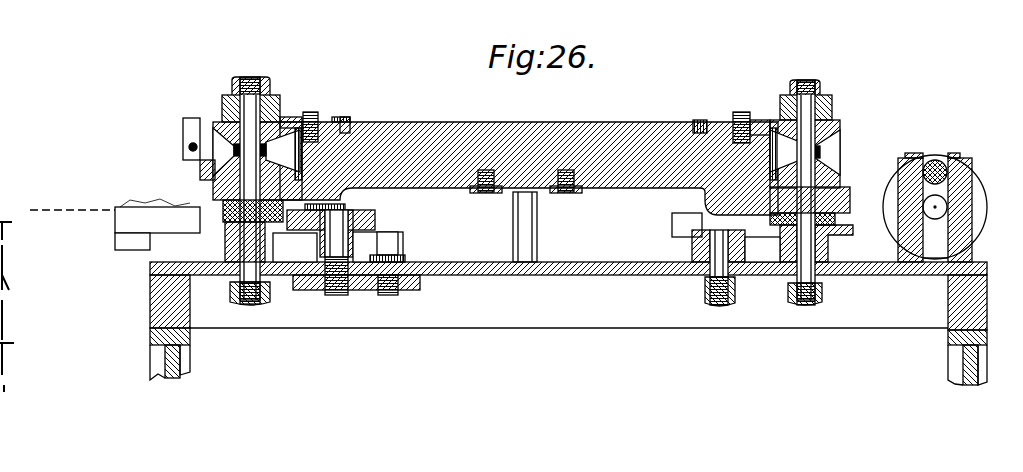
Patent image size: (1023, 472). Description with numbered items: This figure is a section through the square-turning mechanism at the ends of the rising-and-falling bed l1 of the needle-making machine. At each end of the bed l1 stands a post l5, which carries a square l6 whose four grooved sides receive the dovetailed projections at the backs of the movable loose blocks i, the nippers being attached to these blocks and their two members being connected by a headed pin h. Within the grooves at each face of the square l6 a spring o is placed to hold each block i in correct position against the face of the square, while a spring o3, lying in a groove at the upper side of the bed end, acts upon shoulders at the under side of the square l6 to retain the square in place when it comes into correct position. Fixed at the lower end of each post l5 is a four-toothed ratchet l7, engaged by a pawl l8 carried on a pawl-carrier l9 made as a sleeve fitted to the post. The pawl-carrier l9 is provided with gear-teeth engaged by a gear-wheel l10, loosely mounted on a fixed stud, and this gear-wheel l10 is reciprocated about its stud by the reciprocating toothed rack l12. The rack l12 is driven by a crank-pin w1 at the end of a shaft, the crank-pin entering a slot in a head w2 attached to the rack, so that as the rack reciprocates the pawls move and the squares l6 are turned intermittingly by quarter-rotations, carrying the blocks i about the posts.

The rising-and-falling bed l1 is at (529, 158).
The post l5 is at (281, 110).
The square l6 is at (228, 120).
The ratchet l7 is at (850, 200).
The pawl l8 is at (200, 238).
The pawl-carrier l9 is at (230, 232).
The gear-wheel l10 is at (365, 210).
The reciprocating toothed rack l12 is at (948, 207).
The spring o is at (833, 152).
The spring o3 is at (222, 202).
The headed pin h is at (183, 131).
The block i is at (200, 172).
The crank-pin w1 is at (935, 160).
The head w2 is at (972, 170).